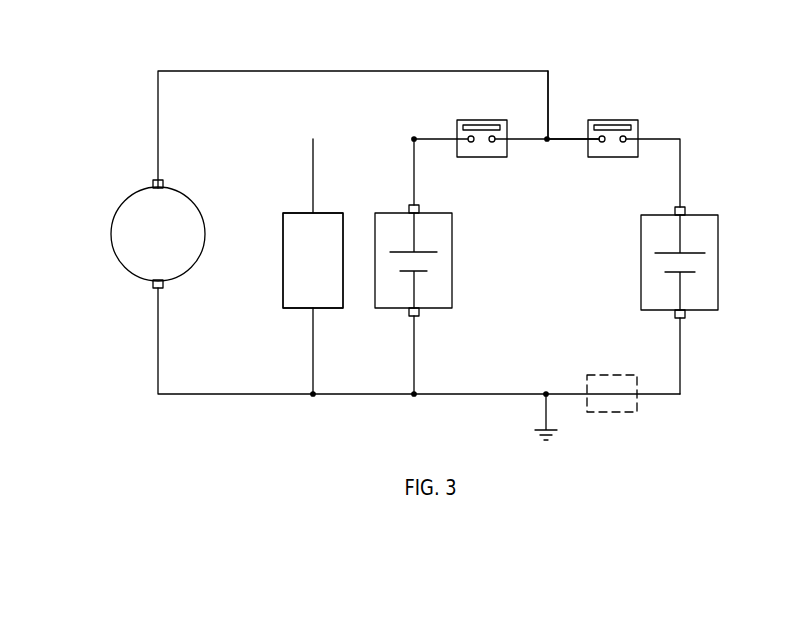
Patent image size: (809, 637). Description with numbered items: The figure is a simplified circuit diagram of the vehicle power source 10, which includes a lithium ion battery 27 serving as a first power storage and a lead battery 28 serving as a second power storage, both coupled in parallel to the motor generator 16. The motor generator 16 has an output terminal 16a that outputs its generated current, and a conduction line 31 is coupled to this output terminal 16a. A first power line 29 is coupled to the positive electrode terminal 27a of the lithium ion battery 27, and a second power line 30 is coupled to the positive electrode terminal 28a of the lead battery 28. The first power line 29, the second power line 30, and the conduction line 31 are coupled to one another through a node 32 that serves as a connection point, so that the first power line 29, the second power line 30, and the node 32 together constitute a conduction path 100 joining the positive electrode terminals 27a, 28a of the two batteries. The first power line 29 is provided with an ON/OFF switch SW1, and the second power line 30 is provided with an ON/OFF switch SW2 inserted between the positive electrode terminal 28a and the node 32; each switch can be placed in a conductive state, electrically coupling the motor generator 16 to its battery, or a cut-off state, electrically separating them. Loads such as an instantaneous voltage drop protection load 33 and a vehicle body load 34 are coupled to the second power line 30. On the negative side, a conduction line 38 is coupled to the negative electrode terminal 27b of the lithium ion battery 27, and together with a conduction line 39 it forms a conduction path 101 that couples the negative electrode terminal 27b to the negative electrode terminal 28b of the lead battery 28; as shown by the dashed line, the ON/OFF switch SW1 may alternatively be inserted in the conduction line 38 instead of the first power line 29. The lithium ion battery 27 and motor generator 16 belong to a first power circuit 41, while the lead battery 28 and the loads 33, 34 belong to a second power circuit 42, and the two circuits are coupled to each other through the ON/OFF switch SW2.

The vehicle power source 10 is at (112, 46).
The motor generator 16 is at (200, 216).
The output terminal 16a is at (155, 179).
The lithium ion battery 27 is at (718, 263).
The positive electrode terminal 27a is at (688, 208).
The negative electrode terminal 27b is at (688, 318).
The lead battery 28 is at (452, 262).
The positive electrode terminal 28a is at (409, 205).
The negative electrode terminal 28b is at (406, 315).
The first power line 29 is at (565, 138).
The second power line 30 is at (431, 138).
The conduction line 31 is at (325, 70).
The node 32 is at (546, 143).
The instantaneous voltage drop protection load 33 is at (283, 292).
The vehicle body load 34 is at (313, 260).
The conduction line 38 is at (678, 350).
The conduction line 39 is at (417, 353).
The first power circuit 41 is at (732, 169).
The second power circuit 42 is at (281, 163).
The conduction path 100 is at (684, 150).
The conduction path 101 is at (684, 381).
The ON/OFF switch SW1 is at (610, 157).
The ON/OFF switch SW2 is at (480, 157).